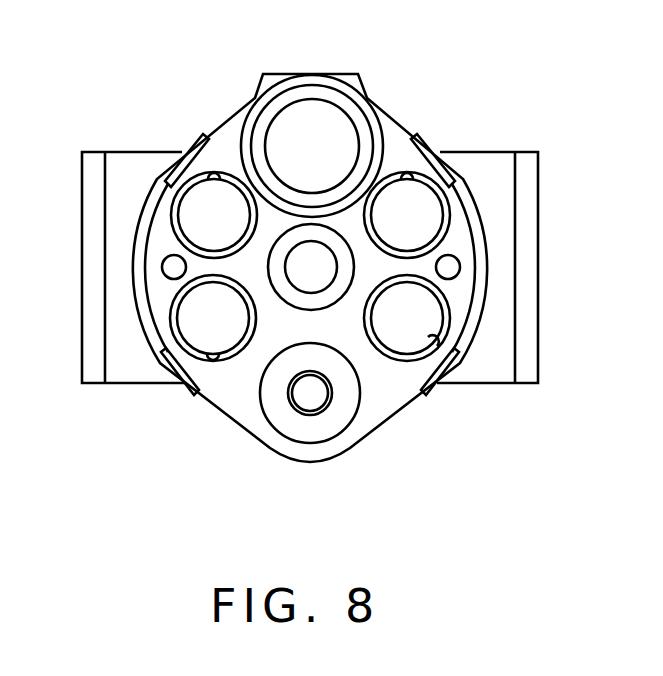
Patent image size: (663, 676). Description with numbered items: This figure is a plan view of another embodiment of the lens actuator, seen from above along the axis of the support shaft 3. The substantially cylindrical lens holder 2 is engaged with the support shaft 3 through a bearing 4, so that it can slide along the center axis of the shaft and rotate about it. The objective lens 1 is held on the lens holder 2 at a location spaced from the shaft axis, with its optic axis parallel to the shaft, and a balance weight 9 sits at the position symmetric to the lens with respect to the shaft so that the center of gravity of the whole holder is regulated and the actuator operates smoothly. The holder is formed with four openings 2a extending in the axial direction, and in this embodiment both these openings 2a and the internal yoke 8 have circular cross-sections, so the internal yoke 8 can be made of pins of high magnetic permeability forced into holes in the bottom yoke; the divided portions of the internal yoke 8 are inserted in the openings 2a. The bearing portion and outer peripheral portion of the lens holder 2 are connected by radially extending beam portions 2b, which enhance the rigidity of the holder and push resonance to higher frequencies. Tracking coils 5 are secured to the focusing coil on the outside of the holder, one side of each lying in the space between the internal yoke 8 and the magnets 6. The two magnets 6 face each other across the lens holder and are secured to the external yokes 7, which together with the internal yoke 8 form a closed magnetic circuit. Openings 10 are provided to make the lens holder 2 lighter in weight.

The objective lens 1 is at (314, 110).
The lens holder 2 is at (372, 400).
The openings 2a is at (215, 179).
The beam portions 2b is at (183, 249).
The support shaft 3 is at (305, 270).
The bearing 4 is at (328, 293).
The tracking coils 5 is at (203, 135).
The magnets 6 is at (123, 162).
The external yokes 7 is at (92, 360).
The internal yoke 8 is at (197, 210).
The balance weight 9 is at (300, 430).
The openings 10 is at (163, 273).